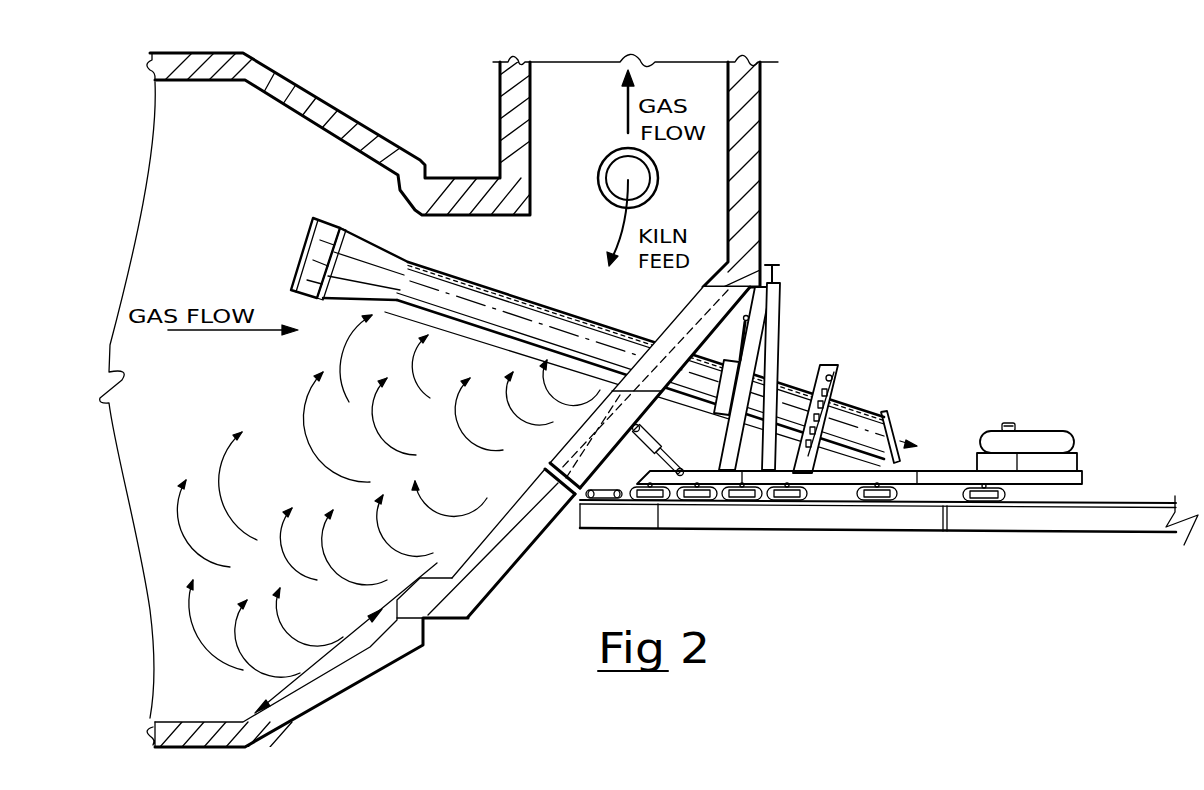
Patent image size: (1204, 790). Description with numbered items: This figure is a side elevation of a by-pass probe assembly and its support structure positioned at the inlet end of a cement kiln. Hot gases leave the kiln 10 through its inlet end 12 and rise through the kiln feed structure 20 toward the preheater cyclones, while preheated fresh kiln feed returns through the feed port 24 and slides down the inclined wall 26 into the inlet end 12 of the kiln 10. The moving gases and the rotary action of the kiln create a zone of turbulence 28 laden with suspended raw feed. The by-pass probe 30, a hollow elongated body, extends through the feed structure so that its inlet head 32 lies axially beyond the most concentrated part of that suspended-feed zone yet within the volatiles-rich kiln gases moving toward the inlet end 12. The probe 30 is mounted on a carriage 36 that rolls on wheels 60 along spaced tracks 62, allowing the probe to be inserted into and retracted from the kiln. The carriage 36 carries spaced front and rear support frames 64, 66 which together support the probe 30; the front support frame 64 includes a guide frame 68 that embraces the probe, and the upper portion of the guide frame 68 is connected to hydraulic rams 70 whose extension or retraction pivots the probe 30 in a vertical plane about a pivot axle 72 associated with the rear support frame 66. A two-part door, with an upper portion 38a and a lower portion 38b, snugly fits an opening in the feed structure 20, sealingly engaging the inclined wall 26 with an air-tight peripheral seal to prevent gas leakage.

The kiln 10 is at (222, 712).
The inlet end 12 is at (392, 662).
The kiln feed structure 20 is at (500, 128).
The feed port 24 is at (699, 187).
The inclined wall 26 is at (480, 527).
The zone of turbulence 28 is at (456, 494).
The by-pass probe 30 is at (490, 290).
The inlet head 32 is at (352, 298).
The carriage 36 is at (948, 434).
The upper portion 38a is at (668, 322).
The lower portion 38b is at (634, 418).
The wheels 60 is at (1004, 496).
The tracks 62 is at (1110, 506).
The front support frame 64 is at (767, 293).
The rear support frame 66 is at (820, 368).
The guide frame 68 is at (713, 413).
The hydraulic rams 70 is at (740, 327).
The pivot axle 72 is at (836, 386).